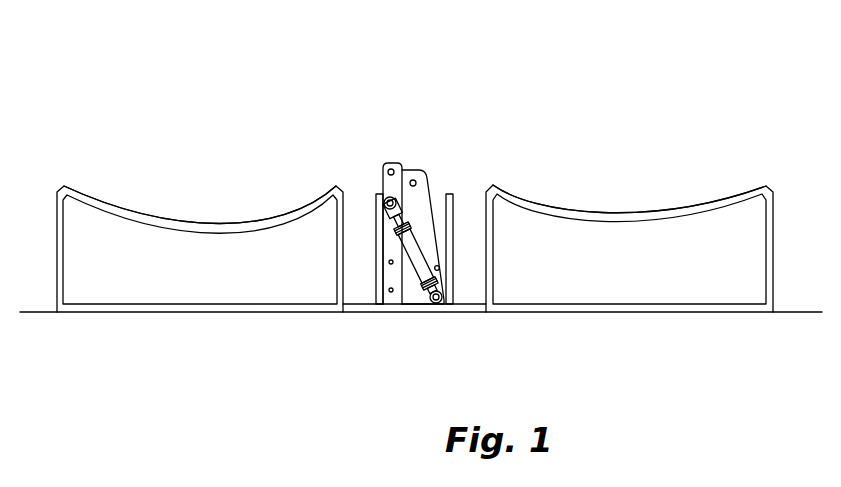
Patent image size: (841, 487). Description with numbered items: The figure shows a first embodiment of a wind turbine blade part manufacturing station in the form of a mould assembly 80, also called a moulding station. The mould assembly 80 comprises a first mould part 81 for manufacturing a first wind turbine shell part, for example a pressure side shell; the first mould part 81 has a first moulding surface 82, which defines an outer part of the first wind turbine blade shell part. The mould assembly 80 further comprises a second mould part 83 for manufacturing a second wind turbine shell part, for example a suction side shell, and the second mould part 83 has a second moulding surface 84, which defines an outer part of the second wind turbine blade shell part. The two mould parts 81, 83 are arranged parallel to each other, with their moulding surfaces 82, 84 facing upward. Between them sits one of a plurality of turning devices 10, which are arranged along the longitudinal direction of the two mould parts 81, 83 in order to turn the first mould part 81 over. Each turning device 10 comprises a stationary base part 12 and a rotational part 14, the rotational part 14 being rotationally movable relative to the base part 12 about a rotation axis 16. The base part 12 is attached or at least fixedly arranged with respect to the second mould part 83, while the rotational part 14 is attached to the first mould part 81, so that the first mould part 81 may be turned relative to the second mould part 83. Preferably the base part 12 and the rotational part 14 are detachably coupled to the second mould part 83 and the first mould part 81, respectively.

The turning device 10 is at (406, 186).
The stationary base part 12 is at (422, 192).
The rotational part 14 is at (382, 164).
The rotation axis 16 is at (414, 182).
The mould assembly 80 is at (477, 101).
The first mould part 81 is at (93, 288).
The first moulding surface 82 is at (118, 203).
The second mould part 83 is at (683, 288).
The second moulding surface 84 is at (655, 203).